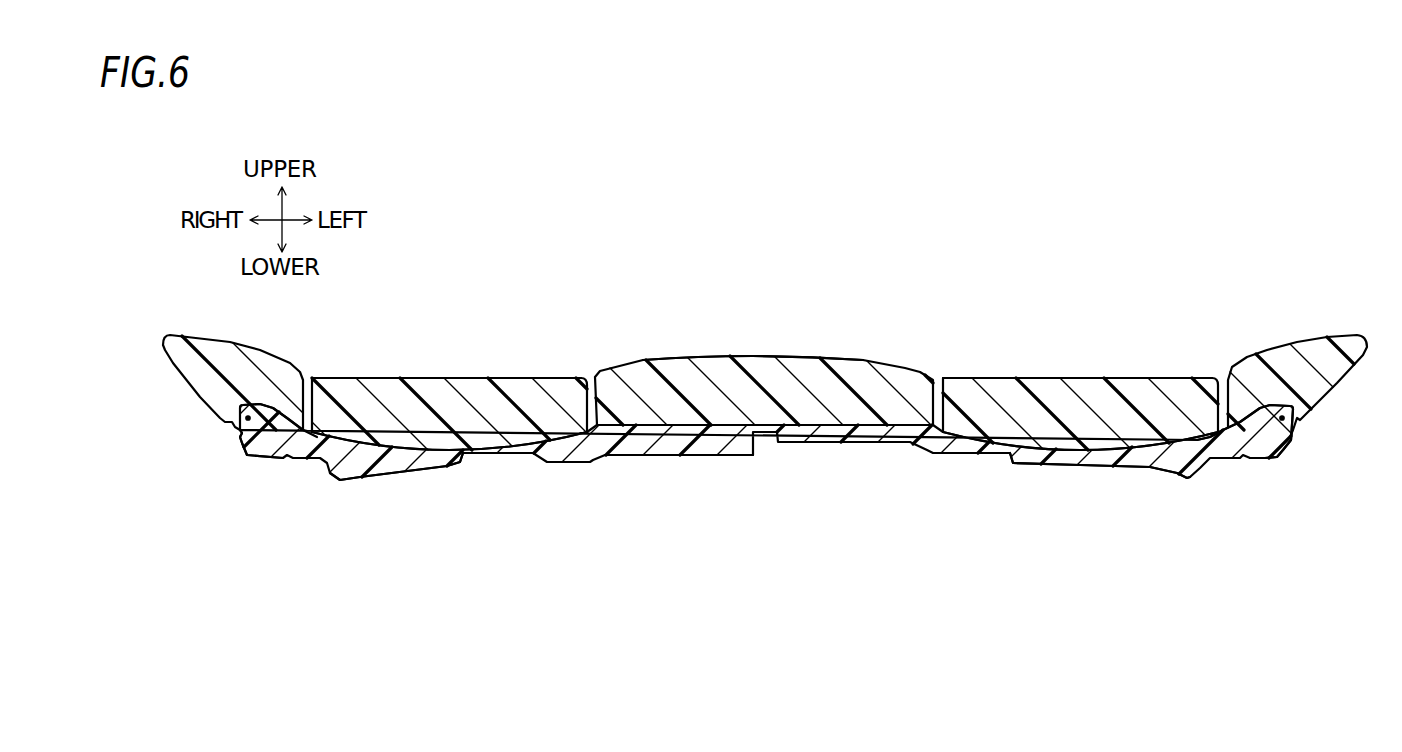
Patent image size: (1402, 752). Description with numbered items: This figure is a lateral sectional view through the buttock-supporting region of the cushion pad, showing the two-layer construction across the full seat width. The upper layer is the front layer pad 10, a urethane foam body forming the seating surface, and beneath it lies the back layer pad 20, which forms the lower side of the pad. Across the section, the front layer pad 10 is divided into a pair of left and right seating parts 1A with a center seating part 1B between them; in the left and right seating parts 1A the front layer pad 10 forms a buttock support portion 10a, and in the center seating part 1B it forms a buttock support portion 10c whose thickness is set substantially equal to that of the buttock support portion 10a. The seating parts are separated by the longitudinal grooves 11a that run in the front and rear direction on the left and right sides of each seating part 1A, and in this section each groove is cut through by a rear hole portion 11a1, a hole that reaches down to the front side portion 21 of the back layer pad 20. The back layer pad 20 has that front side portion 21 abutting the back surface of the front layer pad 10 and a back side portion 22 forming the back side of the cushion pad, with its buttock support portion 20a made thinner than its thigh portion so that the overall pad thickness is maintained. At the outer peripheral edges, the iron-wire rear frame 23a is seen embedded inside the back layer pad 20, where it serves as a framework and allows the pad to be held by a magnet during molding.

The front layer pad 10 is at (523, 377).
The buttock support portion 10a is at (470, 377).
The buttock support portion 10c is at (793, 357).
The seating part 1A is at (413, 377).
The center seating part 1B is at (713, 360).
The longitudinal groove 11a is at (306, 430).
The rear hole portion 11a1 is at (306, 430).
The back layer pad 20 is at (260, 459).
The buttock support portion 20a is at (438, 480).
The front side portion 21 is at (668, 426).
The back side portion 22 is at (623, 456).
The rear frame 23a is at (240, 430).